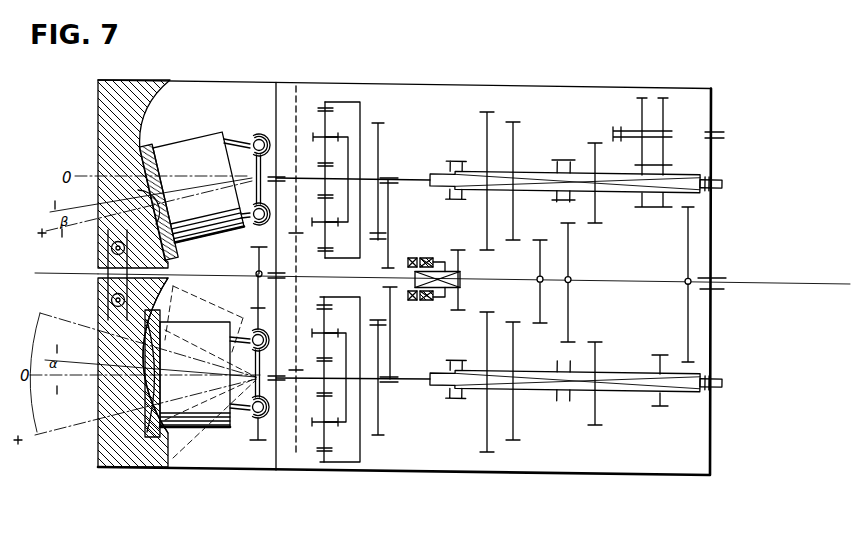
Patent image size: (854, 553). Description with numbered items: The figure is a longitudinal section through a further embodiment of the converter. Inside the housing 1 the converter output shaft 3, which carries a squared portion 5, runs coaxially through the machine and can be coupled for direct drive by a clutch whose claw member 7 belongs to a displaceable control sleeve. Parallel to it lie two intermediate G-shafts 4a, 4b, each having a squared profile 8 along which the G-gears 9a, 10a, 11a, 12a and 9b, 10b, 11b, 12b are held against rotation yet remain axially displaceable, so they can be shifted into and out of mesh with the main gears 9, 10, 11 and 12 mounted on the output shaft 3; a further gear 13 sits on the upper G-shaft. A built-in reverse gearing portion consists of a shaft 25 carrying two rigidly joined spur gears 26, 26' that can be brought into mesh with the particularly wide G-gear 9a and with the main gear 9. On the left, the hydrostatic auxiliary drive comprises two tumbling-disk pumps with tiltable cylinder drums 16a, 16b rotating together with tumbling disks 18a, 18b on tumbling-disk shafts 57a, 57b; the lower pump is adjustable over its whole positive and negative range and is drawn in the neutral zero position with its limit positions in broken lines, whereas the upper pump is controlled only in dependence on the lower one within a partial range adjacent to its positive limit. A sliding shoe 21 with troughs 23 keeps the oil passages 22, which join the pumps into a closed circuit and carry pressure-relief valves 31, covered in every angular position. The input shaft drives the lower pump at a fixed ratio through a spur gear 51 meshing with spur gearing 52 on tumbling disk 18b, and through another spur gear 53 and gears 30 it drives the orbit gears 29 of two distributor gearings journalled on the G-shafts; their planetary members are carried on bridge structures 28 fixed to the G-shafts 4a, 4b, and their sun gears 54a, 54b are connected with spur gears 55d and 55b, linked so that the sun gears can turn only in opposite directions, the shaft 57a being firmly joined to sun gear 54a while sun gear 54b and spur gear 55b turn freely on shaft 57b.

The housing 1 is at (108, 112).
The converter output shaft 3 is at (726, 283).
The intermediate-gearing shaft 4a is at (420, 181).
The intermediate-gearing shaft 4b is at (418, 380).
The squared portion 5 is at (48, 273).
The claw member 7 is at (425, 296).
The squared profile 8 is at (540, 178).
The main gear 9 is at (690, 217).
The G-gear 9a is at (672, 166).
The G-gear 9b is at (660, 406).
The main gear 10 is at (569, 266).
The G-gear 10a is at (595, 142).
The G-gear 10b is at (594, 426).
The main gear 11 is at (541, 299).
The G-gear 11a is at (513, 121).
The G-gear 11b is at (513, 441).
The main gear 12 is at (459, 297).
The G-gear 12a is at (487, 111).
The lower gear 12b is at (484, 454).
The gear 13 is at (562, 161).
The cylinder drum 16a is at (184, 146).
The cylinder drum 16b is at (194, 428).
The tumbling disk 18a is at (250, 150).
The tumbling disk 18b is at (236, 414).
The sliding shoe 21 is at (250, 378).
The oil passages 22 is at (256, 378).
The troughs 23 is at (143, 393).
The shaft 25 is at (688, 130).
The spur gear 26 is at (638, 113).
The spur gear 26' is at (670, 113).
The bridge structure 28 is at (348, 147).
The orbit gear 29 is at (326, 100).
The gears 30 is at (378, 122).
The pressure-relief valves 31 is at (112, 248).
The spur gear 51 is at (252, 249).
The spur gearing 52 is at (259, 442).
The spur gear 53 is at (386, 250).
The sun gear 54a is at (323, 172).
The sun gear 54b is at (328, 390).
The spur gear 55b is at (290, 425).
The gear shaft 55d is at (279, 172).
The tumbling-disk shaft 57a is at (298, 176).
The tumbling-disk shaft 57b is at (296, 420).